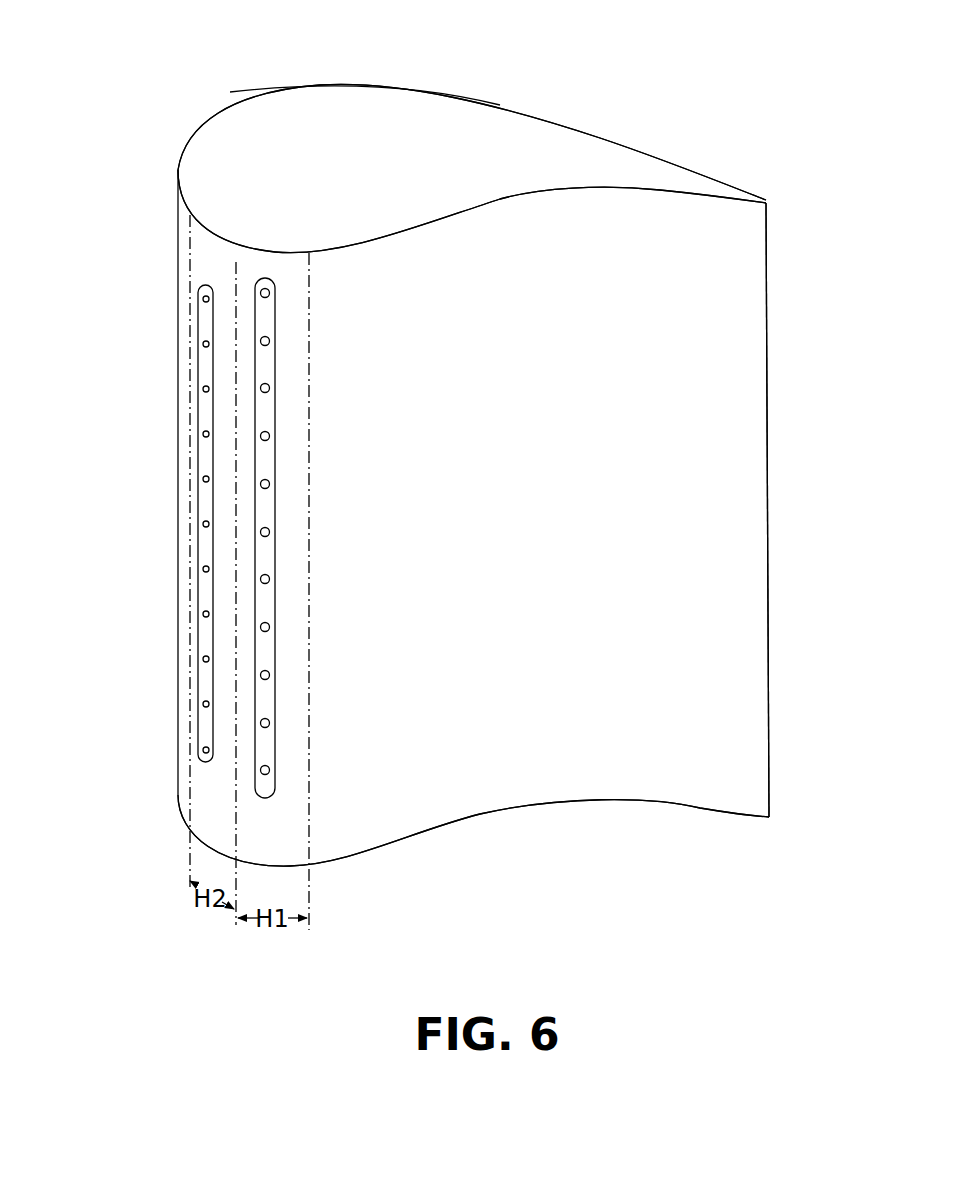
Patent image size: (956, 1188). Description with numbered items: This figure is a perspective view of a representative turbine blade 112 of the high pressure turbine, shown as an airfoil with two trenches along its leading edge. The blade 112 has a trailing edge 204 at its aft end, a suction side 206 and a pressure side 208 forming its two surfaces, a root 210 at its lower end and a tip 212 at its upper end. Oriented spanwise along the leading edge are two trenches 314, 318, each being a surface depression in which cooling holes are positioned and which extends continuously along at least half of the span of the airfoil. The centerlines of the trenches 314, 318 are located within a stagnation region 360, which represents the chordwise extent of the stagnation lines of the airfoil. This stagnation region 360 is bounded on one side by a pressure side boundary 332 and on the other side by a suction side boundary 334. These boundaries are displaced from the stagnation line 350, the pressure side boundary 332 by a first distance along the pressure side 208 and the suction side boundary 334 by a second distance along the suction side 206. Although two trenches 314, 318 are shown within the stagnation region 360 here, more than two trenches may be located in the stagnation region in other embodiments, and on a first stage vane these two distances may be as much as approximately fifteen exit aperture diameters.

The blade 112 is at (508, 498).
The trailing edge 204 is at (748, 655).
The suction side 206 is at (353, 85).
The pressure side 208 is at (643, 210).
The root 210 is at (413, 830).
The tip 212 is at (412, 143).
The trench 314 is at (198, 288).
The trench 318 is at (267, 273).
The pressure side boundary 332 is at (312, 798).
The suction side boundary 334 is at (188, 732).
The stagnation line 350 is at (233, 260).
The stagnation region 360 is at (200, 827).